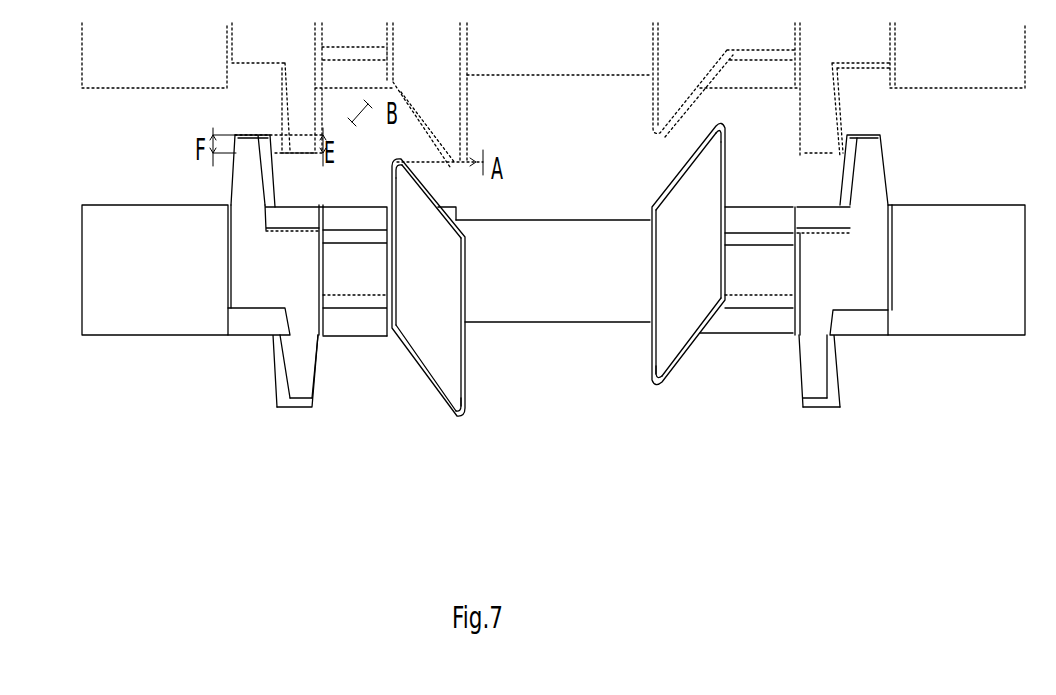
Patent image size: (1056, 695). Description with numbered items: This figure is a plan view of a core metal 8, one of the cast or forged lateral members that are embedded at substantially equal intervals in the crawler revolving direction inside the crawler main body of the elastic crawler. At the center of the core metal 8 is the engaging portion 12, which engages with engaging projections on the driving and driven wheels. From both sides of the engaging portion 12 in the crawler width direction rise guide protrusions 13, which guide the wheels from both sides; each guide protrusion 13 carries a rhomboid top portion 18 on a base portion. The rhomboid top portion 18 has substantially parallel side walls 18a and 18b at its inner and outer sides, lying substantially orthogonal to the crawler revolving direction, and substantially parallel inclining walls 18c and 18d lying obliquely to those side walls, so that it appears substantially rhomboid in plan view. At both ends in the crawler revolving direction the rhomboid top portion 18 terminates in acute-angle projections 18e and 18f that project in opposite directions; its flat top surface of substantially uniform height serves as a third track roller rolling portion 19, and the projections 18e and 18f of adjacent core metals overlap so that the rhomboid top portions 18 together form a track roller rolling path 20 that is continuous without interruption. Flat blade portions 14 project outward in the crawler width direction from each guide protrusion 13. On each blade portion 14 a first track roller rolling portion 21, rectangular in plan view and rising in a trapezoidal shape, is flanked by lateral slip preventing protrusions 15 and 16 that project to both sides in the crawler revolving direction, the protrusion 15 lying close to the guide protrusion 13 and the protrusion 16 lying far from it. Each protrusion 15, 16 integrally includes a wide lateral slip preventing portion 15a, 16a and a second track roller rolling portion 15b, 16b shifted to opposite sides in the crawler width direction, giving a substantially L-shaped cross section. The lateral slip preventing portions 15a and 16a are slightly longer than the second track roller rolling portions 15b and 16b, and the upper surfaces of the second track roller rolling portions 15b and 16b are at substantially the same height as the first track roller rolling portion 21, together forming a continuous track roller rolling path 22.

The core metal 8 is at (560, 80).
The engaging portion 12 is at (555, 237).
The guide protrusion 13 is at (495, 102).
The blade portion 14 is at (130, 222).
The lateral slip preventing protrusion 15 is at (268, 368).
The lateral slip preventing portion 15a is at (282, 392).
The second track roller rolling portion 15b is at (300, 350).
The lateral slip preventing protrusion 16 is at (228, 178).
The lateral slip preventing portion 16a is at (257, 147).
The second track roller rolling portion 16b is at (250, 182).
The rhomboid top portion 18 is at (418, 228).
The side wall 18a is at (466, 310).
The side wall 18b is at (395, 275).
The inclining wall 18c is at (428, 378).
The inclining wall 18d is at (425, 195).
The projection 18e is at (455, 410).
The projection 18f is at (402, 160).
The third track roller rolling portion 19 is at (432, 285).
The track roller rolling path 20 is at (445, 320).
The first track roller rolling portion 21 is at (258, 272).
The track roller rolling path 22 is at (248, 252).